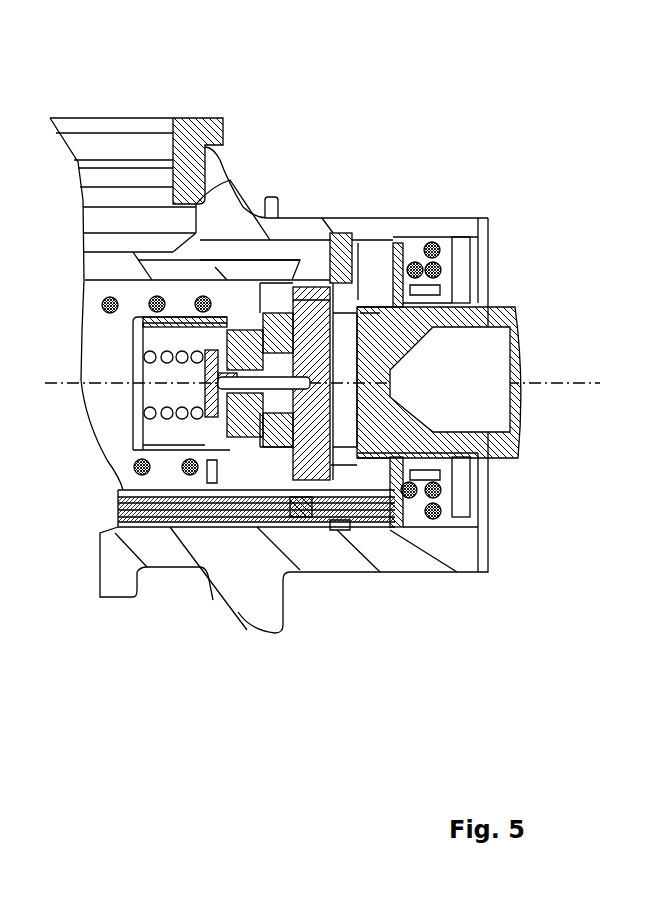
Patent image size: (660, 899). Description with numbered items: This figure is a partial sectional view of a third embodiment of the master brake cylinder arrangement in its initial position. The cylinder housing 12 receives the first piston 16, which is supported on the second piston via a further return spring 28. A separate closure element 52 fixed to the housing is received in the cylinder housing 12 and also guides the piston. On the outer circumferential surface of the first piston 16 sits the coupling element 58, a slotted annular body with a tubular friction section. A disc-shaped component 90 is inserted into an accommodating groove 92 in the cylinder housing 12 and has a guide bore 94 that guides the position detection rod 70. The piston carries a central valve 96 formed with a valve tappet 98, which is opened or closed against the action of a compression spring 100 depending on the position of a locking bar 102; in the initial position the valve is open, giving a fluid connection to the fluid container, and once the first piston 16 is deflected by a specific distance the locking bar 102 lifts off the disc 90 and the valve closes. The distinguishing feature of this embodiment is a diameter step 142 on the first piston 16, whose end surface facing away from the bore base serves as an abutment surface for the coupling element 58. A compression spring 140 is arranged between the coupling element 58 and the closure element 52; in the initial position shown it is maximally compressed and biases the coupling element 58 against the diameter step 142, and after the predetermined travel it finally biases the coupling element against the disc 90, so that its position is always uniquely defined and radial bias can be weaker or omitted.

The cylinder housing 12 is at (237, 227).
The first piston 16 is at (488, 240).
The further return spring 28 is at (110, 313).
The closure element 52 is at (412, 240).
The coupling element 58 is at (397, 530).
The position detection rod 70 is at (236, 527).
The disc-shaped component 90 is at (338, 233).
The accommodating groove 92 is at (350, 240).
The guide bore 94 is at (338, 530).
The central valve 96 is at (178, 428).
The valve tappet 98 is at (208, 483).
The compression spring 100 is at (142, 475).
The locking bar 102 is at (313, 530).
The compression spring 140 is at (407, 527).
The diameter step 142 is at (373, 307).